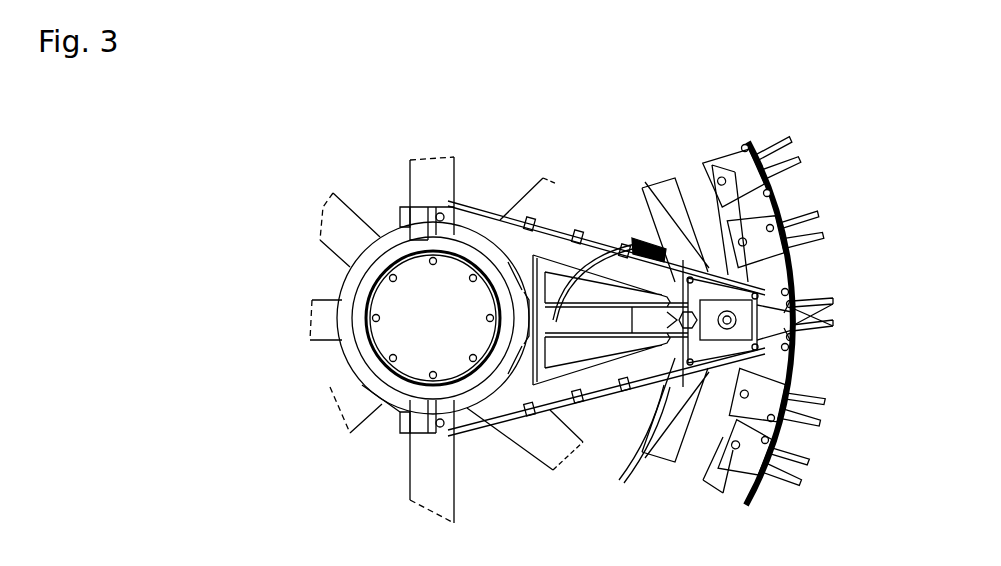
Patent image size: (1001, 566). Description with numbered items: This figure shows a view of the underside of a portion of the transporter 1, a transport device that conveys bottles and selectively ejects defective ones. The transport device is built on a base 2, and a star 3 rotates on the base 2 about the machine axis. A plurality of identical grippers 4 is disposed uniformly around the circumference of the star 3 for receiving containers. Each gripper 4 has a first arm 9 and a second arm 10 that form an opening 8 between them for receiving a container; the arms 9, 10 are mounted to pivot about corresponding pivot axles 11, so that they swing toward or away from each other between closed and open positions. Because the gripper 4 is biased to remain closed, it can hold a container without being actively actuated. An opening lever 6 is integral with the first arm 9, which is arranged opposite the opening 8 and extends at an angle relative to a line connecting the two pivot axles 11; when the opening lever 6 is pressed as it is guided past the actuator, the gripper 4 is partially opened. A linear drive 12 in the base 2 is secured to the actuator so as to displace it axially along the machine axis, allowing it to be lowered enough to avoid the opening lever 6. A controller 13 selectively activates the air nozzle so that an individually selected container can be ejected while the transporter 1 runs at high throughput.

The transporter 1 is at (707, 78).
The base 2 is at (486, 191).
The star 3 is at (685, 165).
The grippers 4 is at (839, 292).
The opening lever 6 is at (660, 188).
The opening 8 is at (846, 319).
The first arm 9 is at (805, 323).
The second arm 10 is at (807, 307).
The pivot axles 11 is at (792, 333).
The linear drive 12 is at (665, 395).
The controller 13 is at (600, 236).